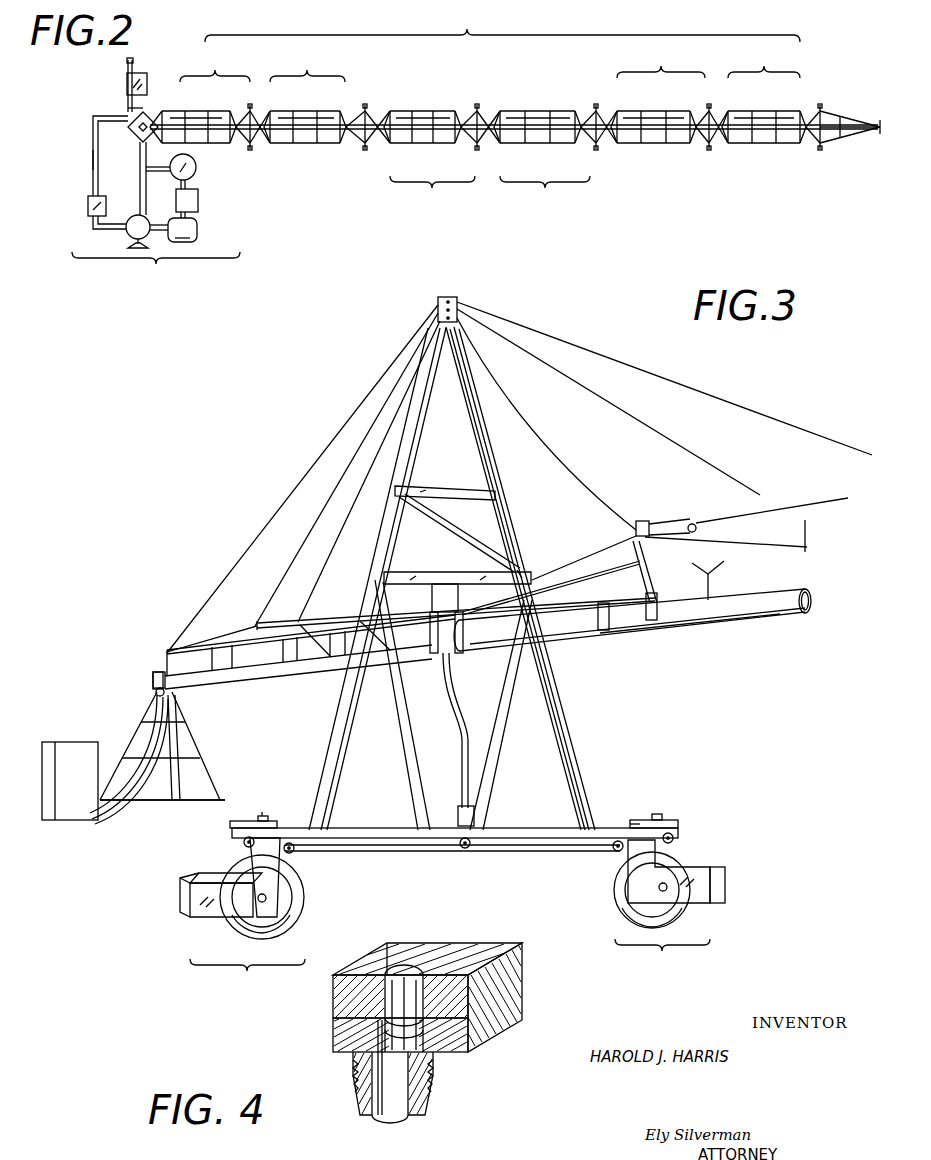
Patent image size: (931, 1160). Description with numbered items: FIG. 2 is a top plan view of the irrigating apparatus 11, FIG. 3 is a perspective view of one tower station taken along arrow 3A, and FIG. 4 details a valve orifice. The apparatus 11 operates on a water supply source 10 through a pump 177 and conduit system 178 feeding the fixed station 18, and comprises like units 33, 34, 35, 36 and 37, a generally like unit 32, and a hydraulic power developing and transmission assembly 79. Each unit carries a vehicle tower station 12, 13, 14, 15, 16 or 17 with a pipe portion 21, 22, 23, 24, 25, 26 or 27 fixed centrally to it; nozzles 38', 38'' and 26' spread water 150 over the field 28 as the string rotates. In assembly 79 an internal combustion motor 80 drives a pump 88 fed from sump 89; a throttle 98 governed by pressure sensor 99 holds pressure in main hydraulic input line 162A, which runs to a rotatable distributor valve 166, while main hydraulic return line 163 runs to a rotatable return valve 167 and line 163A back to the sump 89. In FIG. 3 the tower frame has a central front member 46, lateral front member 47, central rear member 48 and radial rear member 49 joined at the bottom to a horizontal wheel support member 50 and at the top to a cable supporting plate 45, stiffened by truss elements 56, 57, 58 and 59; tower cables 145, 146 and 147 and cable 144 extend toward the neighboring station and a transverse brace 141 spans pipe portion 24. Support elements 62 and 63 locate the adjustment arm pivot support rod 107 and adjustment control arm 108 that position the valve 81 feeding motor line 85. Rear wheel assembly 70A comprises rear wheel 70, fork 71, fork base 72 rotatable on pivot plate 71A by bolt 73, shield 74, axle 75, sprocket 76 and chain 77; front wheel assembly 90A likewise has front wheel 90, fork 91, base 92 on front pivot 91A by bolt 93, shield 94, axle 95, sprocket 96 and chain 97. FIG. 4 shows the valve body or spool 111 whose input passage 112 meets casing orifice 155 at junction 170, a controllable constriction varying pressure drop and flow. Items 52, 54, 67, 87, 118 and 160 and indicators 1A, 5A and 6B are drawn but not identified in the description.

In FIG. 2, the water supply source 10 is at (133, 62).
In FIG. 2, the apparatus 11 is at (514, 68).
In FIG. 2, the vehicle tower station 12 is at (821, 106).
In FIG. 2, the vehicle tower station 13 is at (710, 106).
In FIG. 2, the vehicle tower station 14 is at (597, 149).
In FIG. 2, the vehicle tower station 15 is at (478, 149).
In FIG. 2, the vehicle tower station 16 is at (366, 106).
In FIG. 2, the vehicle tower station 17 is at (258, 99).
In FIG. 3, the vehicle tower station 17 is at (412, 413).
In FIG. 2, the fixed station 18 is at (114, 118).
In FIG. 3, the fixed station 18 is at (205, 778).
In FIG. 2, the pipe portion 21 is at (856, 120).
In FIG. 2, the pipe portion 22 is at (750, 125).
In FIG. 2, the pipe portion 23 is at (634, 125).
In FIG. 2, the pipe portion 24 is at (522, 130).
In FIG. 2, the pipe portion 25 is at (408, 130).
In FIG. 2, the pipe portion 26 is at (304, 101).
In FIG. 3, the pipe portion 26 is at (632, 620).
In FIG. 3, the nozzle 26' is at (717, 574).
In FIG. 2, the pipe portion 27 is at (176, 118).
In FIG. 3, the pipe portion 27 is at (158, 668).
In FIG. 3, the field 28 is at (162, 818).
In FIG. 2, the generally like unit 32 is at (764, 96).
In FIG. 2, the unit of guyed pipes and vehicle tower station 33 is at (661, 96).
In FIG. 2, the unit of guyed pipes and vehicle tower station 34 is at (545, 159).
In FIG. 2, the unit of guyed pipes and vehicle tower station 35 is at (432, 159).
In FIG. 2, the unit of guyed pipes and vehicle tower station 36 is at (307, 96).
In FIG. 2, the unit of guyed pipes and vehicle tower station 37 is at (200, 96).
In FIG. 3, the irrigating nozzle 38' is at (311, 644).
In FIG. 3, the irrigating nozzle 38'' is at (456, 617).
In FIG. 3, the cable supporting plate 45 is at (440, 306).
In FIG. 3, the rigid central front member 46 is at (560, 725).
In FIG. 3, the rigid lateral front member 47 is at (572, 755).
In FIG. 3, the rigid central rear vertical member 48 is at (328, 755).
In FIG. 3, the rigid radial rear vertical member 49 is at (352, 722).
In FIG. 3, the rigid horizontal wheel support member 50 is at (300, 832).
In FIG. 3, the cross brace 52 is at (455, 488).
In FIG. 3, the water pipe 54 is at (320, 670).
In FIG. 3, the rigid truss element 56 is at (497, 716).
In FIG. 3, the rigid truss element 57 is at (505, 753).
In FIG. 3, the rigid truss element 58 is at (400, 750).
In FIG. 3, the rigid truss element 59 is at (415, 774).
In FIG. 3, the top rear adjustment arm support element 62 is at (432, 533).
In FIG. 3, the bottom front control arm support element 63 is at (512, 530).
In FIG. 3, the joint 67 is at (516, 570).
In FIG. 3, the rear wheel 70 is at (306, 903).
In FIG. 3, the rear wheel assembly 70A is at (247, 976).
In FIG. 3, the rear wheel fork 71 is at (245, 850).
In FIG. 3, the pivot plate 71A is at (252, 820).
In FIG. 3, the rear wheel fork base 72 is at (238, 834).
In FIG. 3, the rear wheel fork base bolt 73 is at (267, 808).
In FIG. 3, the rear wheel shield 74 is at (200, 905).
In FIG. 3, the rear wheel axle 75 is at (238, 918).
In FIG. 3, the rear wheel sprocket 76 is at (296, 922).
In FIG. 3, the rear wheel sprocket chain 77 is at (364, 850).
In FIG. 2, the hydraulic power developing and transmission assembly 79 is at (156, 268).
In FIG. 3, the hydraulic power developing and transmission assembly 79 is at (82, 744).
In FIG. 2, the prime mover internal combustion motor 80 is at (197, 230).
In FIG. 3, the valve 81 is at (432, 652).
In FIG. 4, the motor line 85 is at (356, 1108).
In FIG. 3, the hose fitting 87 is at (466, 847).
In FIG. 2, the pump 88 is at (128, 242).
In FIG. 2, the sump 89 is at (88, 206).
In FIG. 3, the front wheel 90 is at (616, 884).
In FIG. 3, the front wheel assembly 90A is at (662, 956).
In FIG. 3, the front wheel fork 91 is at (678, 868).
In FIG. 3, the front pivot 91A is at (636, 822).
In FIG. 3, the front wheel fork base 92 is at (672, 826).
In FIG. 3, the front wheel fork base bolt 93 is at (664, 814).
In FIG. 3, the front wheel shield 94 is at (726, 886).
In FIG. 3, the front wheel axle 95 is at (680, 905).
In FIG. 3, the front wheel sprocket 96 is at (628, 910).
In FIG. 3, the front sprocket chain 97 is at (570, 852).
In FIG. 2, the throttle 98 is at (198, 201).
In FIG. 2, the automatic pressure sensor 99 is at (196, 170).
In FIG. 3, the adjustment arm pivot support rod 107 is at (524, 594).
In FIG. 3, the adjustment control arm 108 is at (440, 572).
In FIG. 4, the valve body or spool 111 is at (332, 1005).
In FIG. 4, the narrowly branched input passage 112 is at (420, 965).
In FIG. 4, the block side 118 is at (524, 1005).
In FIG. 3, the transverse brace 141 is at (712, 522).
In FIG. 3, the cable 144 is at (560, 576).
In FIG. 3, the tower cable 145 is at (752, 413).
In FIG. 3, the tower cable 146 is at (632, 420).
In FIG. 3, the tower cable 147 is at (566, 482).
In FIG. 3, the water 150 is at (722, 559).
In FIG. 4, the orifice 155 is at (376, 1038).
In FIG. 3, the hose 160 is at (455, 655).
In FIG. 2, the main hydraulic input line 162A is at (140, 190).
In FIG. 3, the main hydraulic input line 162A is at (165, 742).
In FIG. 3, the main hydraulic return line 163 is at (712, 625).
In FIG. 2, the return line 163A is at (94, 158).
In FIG. 3, the return line 163A is at (160, 735).
In FIG. 3, the rotatable distributor valve 166 is at (156, 696).
In FIG. 3, the rotatable return valve 167 is at (152, 683).
In FIG. 4, the junction 170 is at (450, 1040).
In FIG. 2, the pump 177 is at (130, 86).
In FIG. 2, the conduit system 178 is at (126, 109).
In FIG. 2, the section view 1A is at (660, 165).
In FIG. 2, the arrow 3A is at (250, 160).
In FIG. 2, the view arrow 5A is at (473, 103).
In FIG. 2, the view arrow 6B is at (491, 104).